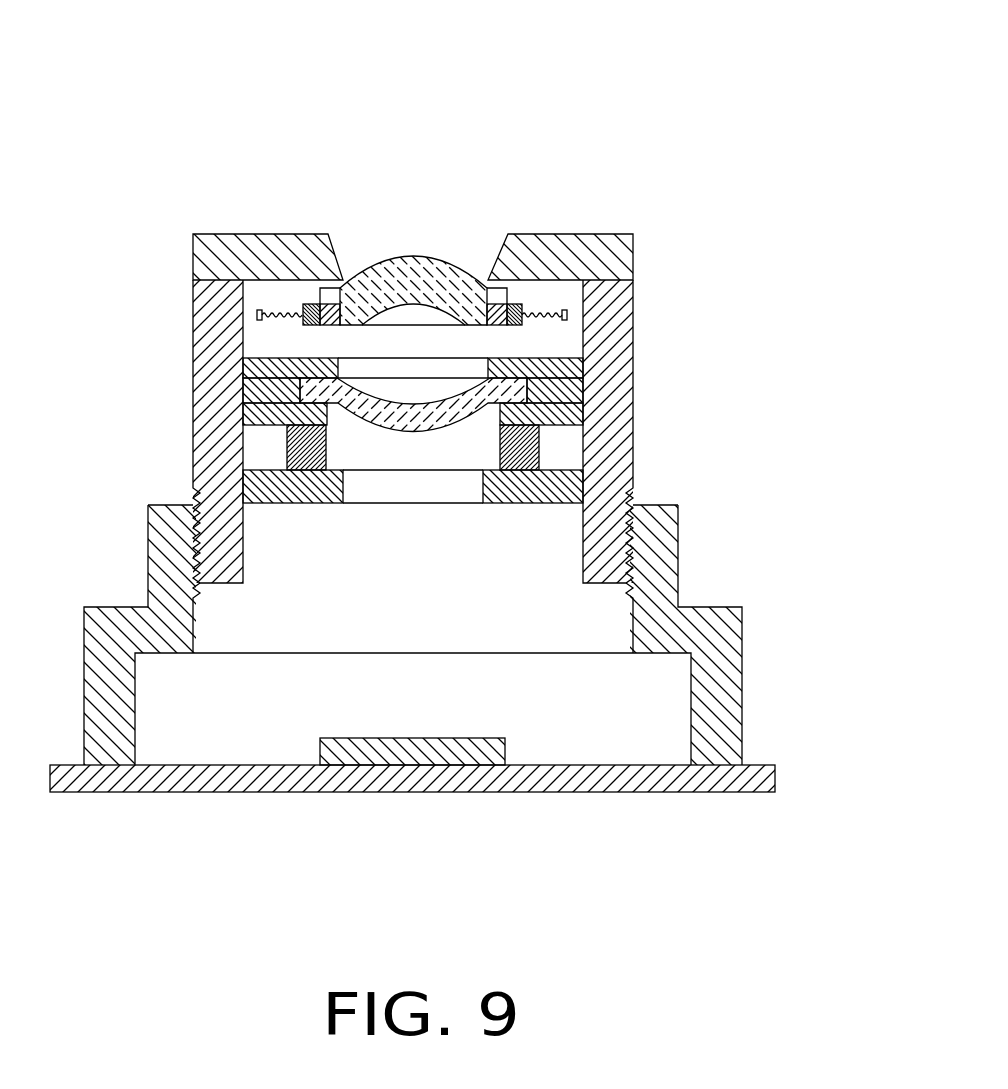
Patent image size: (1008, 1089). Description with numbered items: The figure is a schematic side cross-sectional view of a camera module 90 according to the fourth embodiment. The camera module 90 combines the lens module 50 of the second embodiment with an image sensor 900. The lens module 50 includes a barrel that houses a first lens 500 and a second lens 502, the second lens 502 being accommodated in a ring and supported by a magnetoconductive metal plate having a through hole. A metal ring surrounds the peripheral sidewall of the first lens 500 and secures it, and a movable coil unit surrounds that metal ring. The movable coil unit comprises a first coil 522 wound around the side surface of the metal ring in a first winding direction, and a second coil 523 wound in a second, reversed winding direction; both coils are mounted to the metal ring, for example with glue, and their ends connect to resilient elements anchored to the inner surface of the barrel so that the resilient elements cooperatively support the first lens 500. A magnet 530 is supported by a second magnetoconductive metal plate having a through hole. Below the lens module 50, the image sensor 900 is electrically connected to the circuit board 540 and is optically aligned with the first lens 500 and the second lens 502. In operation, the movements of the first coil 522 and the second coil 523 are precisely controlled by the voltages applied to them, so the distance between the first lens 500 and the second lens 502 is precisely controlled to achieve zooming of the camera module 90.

The camera module 90 is at (432, 52).
The lens module 50 is at (650, 327).
The first lens 500 is at (435, 278).
The second lens 502 is at (307, 387).
The first coil 522 is at (508, 304).
The second coil 523 is at (515, 308).
The magnet 530 is at (307, 450).
The circuit board 540 is at (757, 765).
The image sensor 900 is at (445, 748).